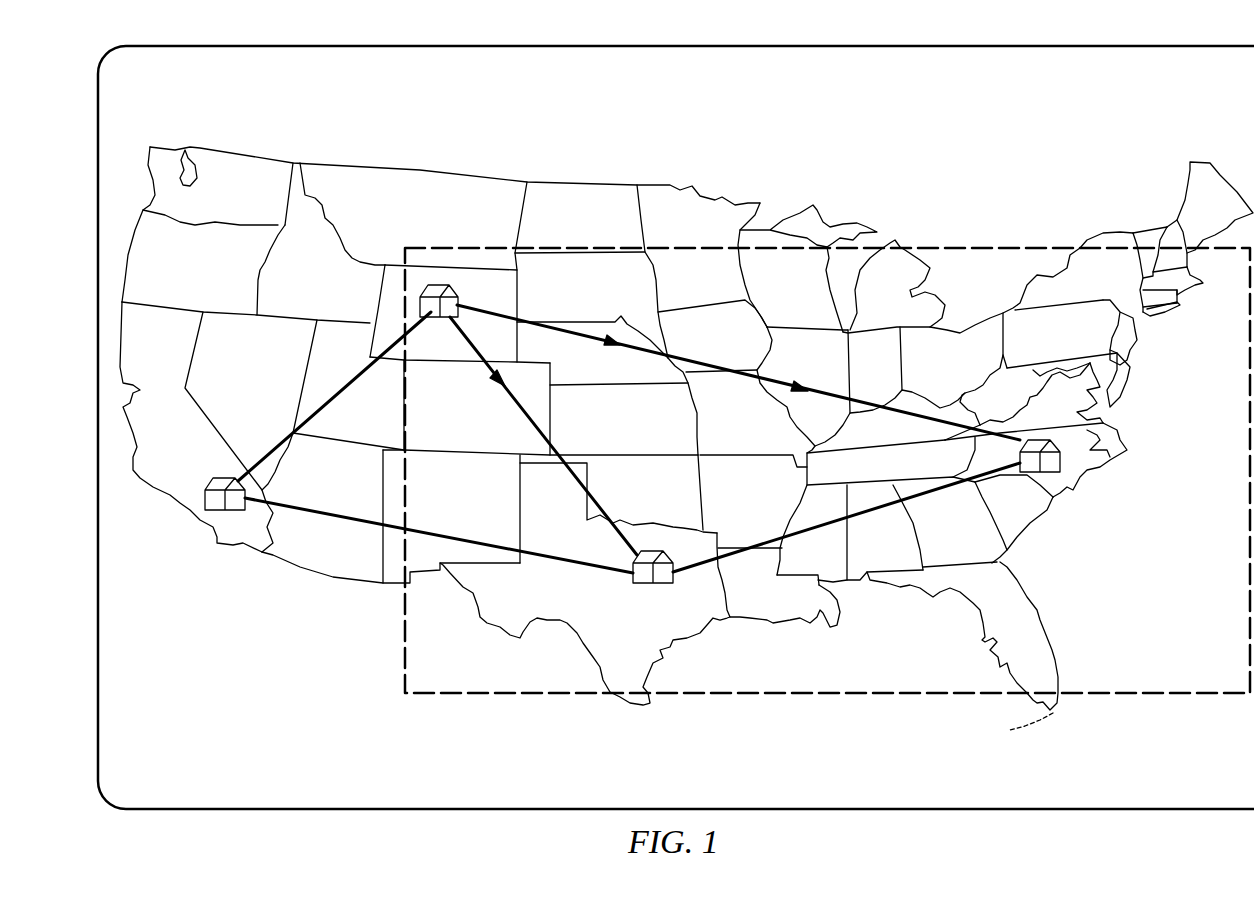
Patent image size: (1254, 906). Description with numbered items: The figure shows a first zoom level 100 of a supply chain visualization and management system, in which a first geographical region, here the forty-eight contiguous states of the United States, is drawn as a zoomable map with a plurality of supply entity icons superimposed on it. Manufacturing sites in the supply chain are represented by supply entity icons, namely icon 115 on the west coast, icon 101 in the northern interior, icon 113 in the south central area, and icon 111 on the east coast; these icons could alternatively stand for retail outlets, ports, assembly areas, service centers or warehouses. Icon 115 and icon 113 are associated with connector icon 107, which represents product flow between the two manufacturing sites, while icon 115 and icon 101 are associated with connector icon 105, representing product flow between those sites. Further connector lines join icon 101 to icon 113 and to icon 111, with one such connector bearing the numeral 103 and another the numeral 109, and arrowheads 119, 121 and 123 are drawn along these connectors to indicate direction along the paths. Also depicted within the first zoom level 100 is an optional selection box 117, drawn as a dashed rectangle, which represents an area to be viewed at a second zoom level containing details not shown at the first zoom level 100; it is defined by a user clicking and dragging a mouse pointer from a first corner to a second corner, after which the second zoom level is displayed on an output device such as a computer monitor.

The first zoom level 100 is at (857, 171).
The icon 101 is at (432, 283).
The link between first node and third node 103 is at (578, 485).
The connector icon 105 is at (348, 398).
The connector icon 107 is at (350, 514).
The link between first node and second node 109 is at (745, 377).
The icon 111 is at (1053, 482).
The icon 113 is at (647, 583).
The icon 115 is at (204, 482).
The selection box 117 is at (405, 631).
The data transmission direction arrow 119 is at (498, 388).
The data transmission direction arrow 121 is at (614, 333).
The data transmission direction arrow 123 is at (801, 383).